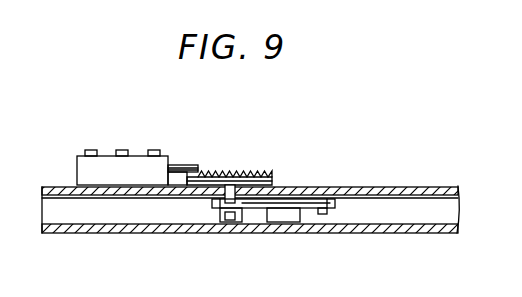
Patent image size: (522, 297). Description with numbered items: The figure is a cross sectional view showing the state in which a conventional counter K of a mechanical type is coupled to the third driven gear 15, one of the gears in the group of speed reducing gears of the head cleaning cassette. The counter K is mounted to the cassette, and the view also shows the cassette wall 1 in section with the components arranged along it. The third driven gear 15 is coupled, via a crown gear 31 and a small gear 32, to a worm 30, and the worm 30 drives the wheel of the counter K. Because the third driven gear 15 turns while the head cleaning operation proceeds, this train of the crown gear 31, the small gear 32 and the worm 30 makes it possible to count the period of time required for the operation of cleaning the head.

The tube 1 is at (93, 234).
The counter K is at (136, 170).
The worm 30 is at (188, 162).
The crown gear 31 is at (243, 168).
The small gear 32 is at (215, 199).
The third driven gear 15 is at (310, 203).